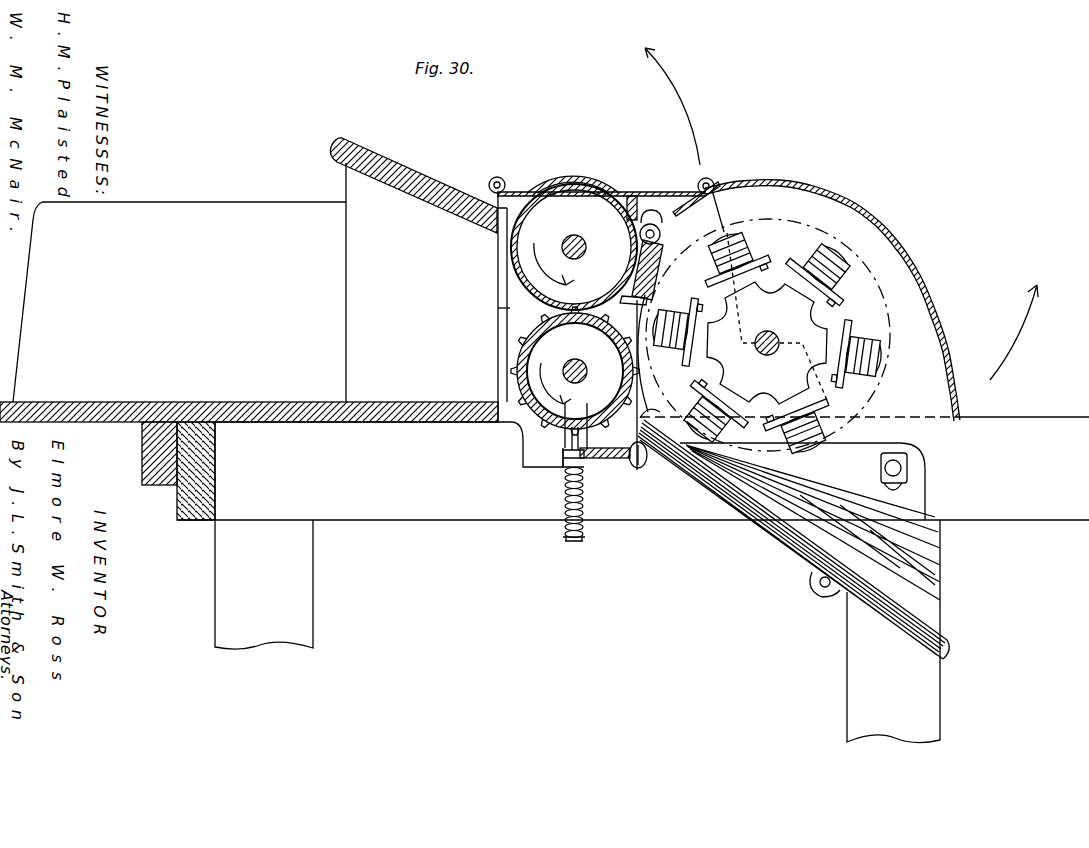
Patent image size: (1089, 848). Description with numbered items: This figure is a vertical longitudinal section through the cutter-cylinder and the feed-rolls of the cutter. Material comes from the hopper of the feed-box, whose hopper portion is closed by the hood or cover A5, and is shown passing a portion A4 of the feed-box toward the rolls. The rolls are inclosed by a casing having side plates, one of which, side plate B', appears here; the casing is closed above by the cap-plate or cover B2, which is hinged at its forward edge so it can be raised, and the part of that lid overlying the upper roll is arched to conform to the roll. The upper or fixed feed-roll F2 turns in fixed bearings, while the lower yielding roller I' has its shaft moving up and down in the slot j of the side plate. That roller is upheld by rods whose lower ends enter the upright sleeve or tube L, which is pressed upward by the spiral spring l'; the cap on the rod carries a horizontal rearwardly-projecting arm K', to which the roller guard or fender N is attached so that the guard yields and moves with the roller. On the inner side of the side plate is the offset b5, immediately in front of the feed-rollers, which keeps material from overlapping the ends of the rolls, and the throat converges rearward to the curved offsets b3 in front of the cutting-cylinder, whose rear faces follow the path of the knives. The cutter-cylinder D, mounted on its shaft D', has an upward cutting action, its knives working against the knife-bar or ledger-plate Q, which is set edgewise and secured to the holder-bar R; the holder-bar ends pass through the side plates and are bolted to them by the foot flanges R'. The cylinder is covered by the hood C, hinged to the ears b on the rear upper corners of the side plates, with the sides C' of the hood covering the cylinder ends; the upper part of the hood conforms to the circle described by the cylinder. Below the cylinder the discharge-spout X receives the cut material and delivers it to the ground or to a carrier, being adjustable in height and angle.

The hopper box A4 is at (179, 302).
The hood or cover of the hopper portion of the feed-box A5 is at (408, 174).
The cap-plate or cover B2 is at (628, 192).
The ears b is at (710, 183).
The side plate B' is at (644, 208).
The fixed feed-roll F2 is at (574, 243).
The roller I' is at (575, 371).
The offset b5 is at (510, 319).
The foot flanges R' is at (667, 232).
The knife-bar or ledger-plate Q is at (660, 268).
The holder-bar R is at (629, 307).
The curved offsets b3 is at (635, 353).
The roller guard or fender N is at (650, 405).
The horizontal rearwardly-projecting arm K' is at (605, 442).
The slot j is at (565, 437).
The spiral springs l' is at (585, 503).
The upright sleeve or tube L is at (577, 541).
The hood C is at (832, 300).
The sides of the hood C' is at (783, 335).
The cutter-cylinder D is at (766, 343).
The cutter-cylinder shaft D' is at (777, 316).
The discharge-spout X is at (793, 539).